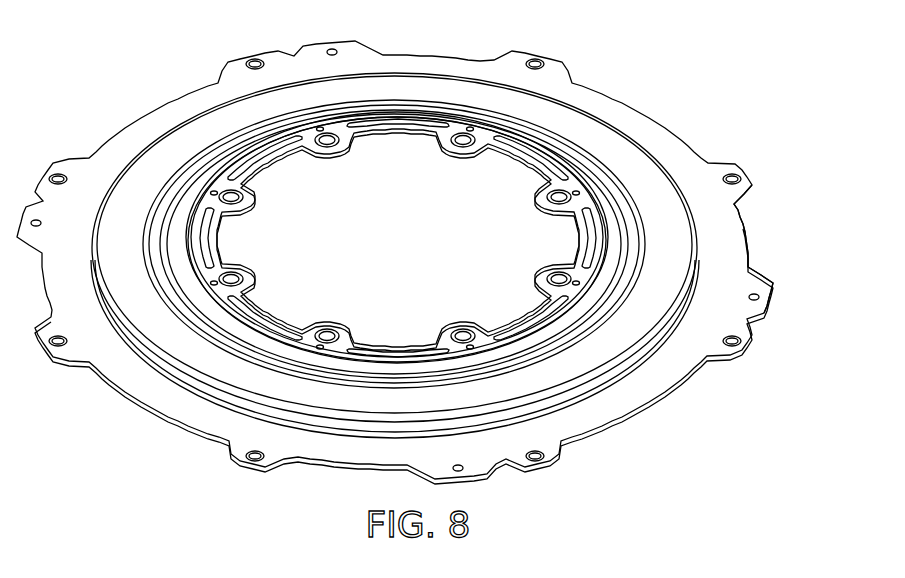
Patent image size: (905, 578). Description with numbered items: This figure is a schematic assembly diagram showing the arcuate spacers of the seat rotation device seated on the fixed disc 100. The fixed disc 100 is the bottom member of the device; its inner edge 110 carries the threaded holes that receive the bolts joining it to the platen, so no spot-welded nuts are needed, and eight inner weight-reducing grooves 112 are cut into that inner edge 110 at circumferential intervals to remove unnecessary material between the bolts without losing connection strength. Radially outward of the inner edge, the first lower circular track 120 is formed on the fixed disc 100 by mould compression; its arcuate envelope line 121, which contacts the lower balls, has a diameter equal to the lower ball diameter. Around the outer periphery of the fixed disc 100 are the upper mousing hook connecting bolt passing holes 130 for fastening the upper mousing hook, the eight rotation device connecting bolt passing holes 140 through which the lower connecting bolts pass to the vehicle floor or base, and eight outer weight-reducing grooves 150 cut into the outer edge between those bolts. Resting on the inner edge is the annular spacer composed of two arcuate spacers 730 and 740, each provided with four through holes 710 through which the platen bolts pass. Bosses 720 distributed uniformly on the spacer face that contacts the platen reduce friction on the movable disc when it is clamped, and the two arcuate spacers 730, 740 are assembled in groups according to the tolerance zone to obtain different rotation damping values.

The fixed disc 100 is at (675, 145).
The inner edge of the fixed disc 110 is at (455, 160).
The inner weight-reducing grooves 112 is at (390, 135).
The first lower circular track 120 is at (620, 197).
The arcuate envelope line 121 is at (427, 229).
The upper mousing hook connecting bolt passing holes 130 is at (768, 287).
The rotation device connecting bolt passing holes 140 is at (737, 347).
The outer weight-reducing grooves 150 is at (748, 230).
The through holes 710 is at (460, 135).
The bosses 720 is at (537, 153).
The arcuate spacer 730 is at (485, 133).
The arcuate spacer 740 is at (198, 232).